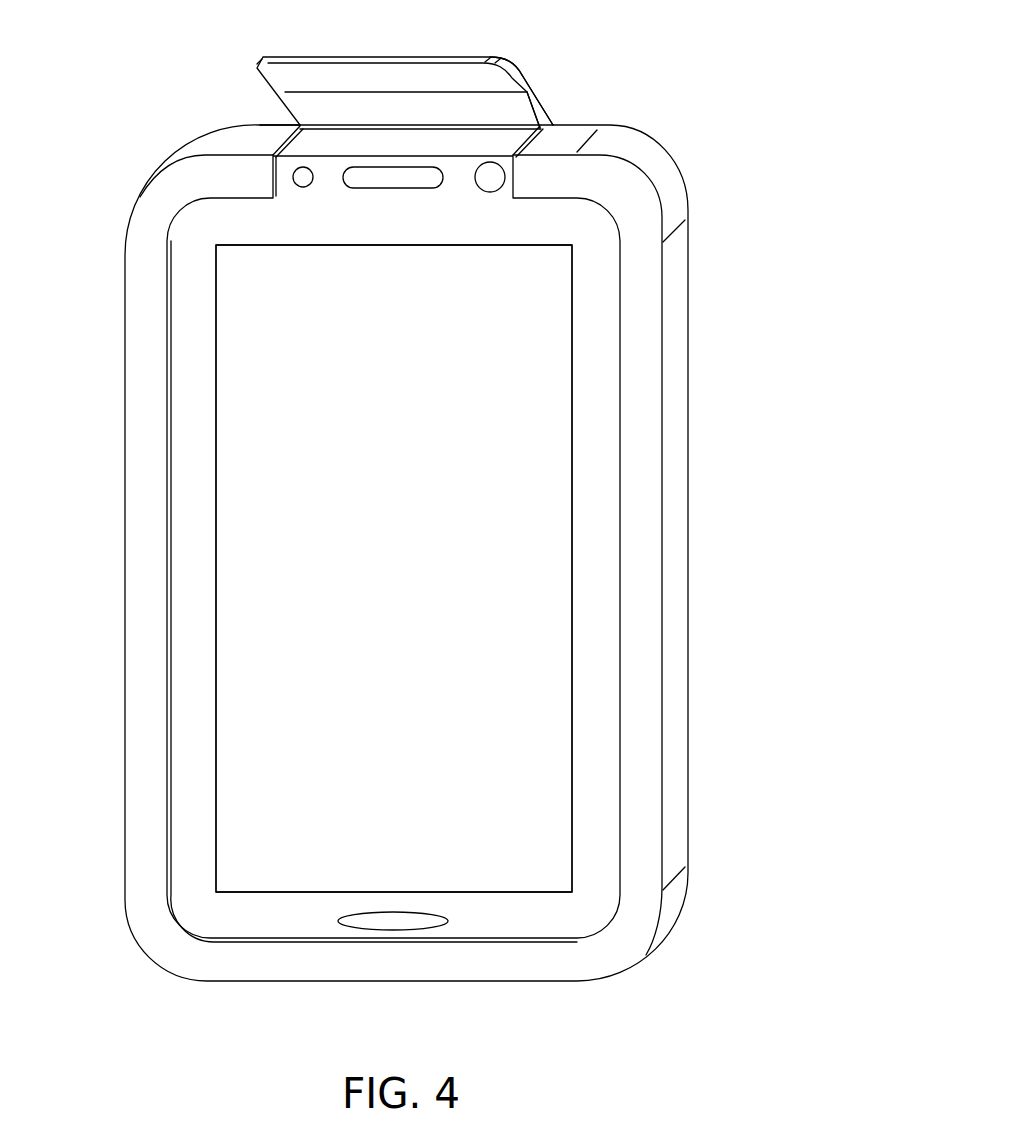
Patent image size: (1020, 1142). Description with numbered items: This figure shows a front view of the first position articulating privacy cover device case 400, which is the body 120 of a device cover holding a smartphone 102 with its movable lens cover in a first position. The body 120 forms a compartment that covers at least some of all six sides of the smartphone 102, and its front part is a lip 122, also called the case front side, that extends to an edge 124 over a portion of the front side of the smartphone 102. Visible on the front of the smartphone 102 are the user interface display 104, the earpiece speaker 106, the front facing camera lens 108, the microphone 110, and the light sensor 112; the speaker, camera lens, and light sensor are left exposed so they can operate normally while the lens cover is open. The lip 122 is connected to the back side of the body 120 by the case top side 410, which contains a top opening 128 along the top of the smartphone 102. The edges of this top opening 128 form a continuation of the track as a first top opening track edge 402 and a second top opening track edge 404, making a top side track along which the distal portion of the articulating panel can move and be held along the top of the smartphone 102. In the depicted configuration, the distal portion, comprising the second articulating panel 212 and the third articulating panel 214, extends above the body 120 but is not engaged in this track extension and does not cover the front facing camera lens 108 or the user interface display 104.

The first position articulating privacy cover device case 400 is at (450, 515).
The smartphone 102 is at (185, 462).
The user interface display 104 is at (550, 380).
The earpiece speaker 106 is at (392, 190).
The front facing camera lens 108 is at (492, 192).
The microphone 110 is at (395, 932).
The light sensor 112 is at (297, 188).
The body 120 is at (125, 643).
The lip 122 is at (612, 178).
The edge 124 is at (167, 743).
The top opening 128 is at (368, 140).
The second articulating panel 212 is at (550, 108).
The third articulating panel 214 is at (522, 74).
The first top opening track edge 402 is at (275, 150).
The second top opening track edge 404 is at (526, 145).
The case top side 410 is at (258, 133).